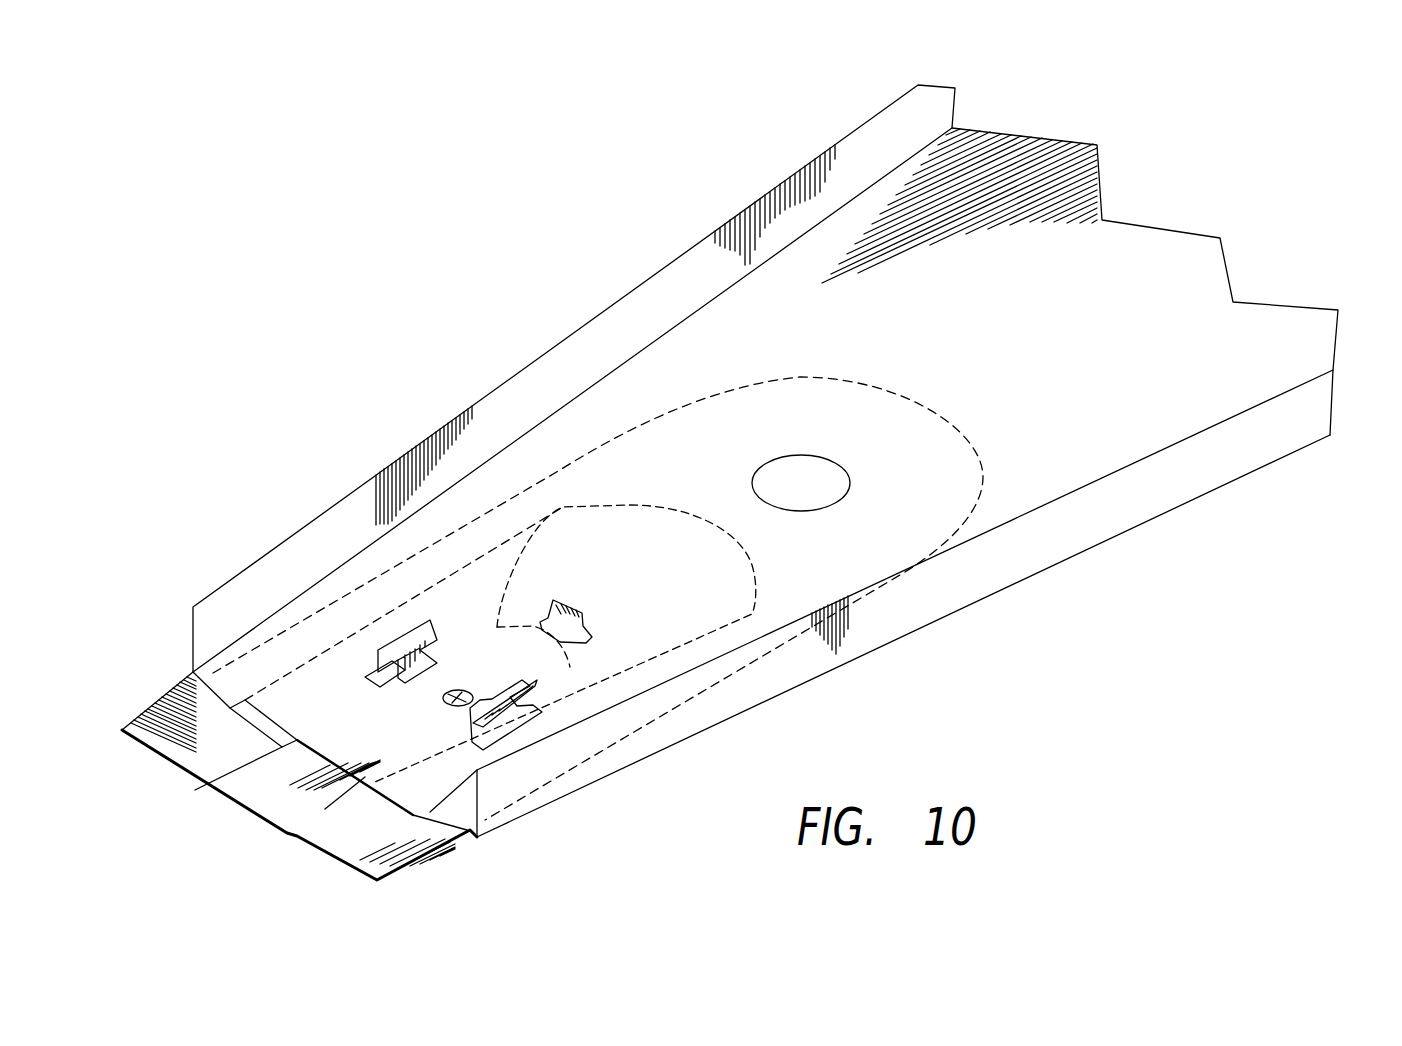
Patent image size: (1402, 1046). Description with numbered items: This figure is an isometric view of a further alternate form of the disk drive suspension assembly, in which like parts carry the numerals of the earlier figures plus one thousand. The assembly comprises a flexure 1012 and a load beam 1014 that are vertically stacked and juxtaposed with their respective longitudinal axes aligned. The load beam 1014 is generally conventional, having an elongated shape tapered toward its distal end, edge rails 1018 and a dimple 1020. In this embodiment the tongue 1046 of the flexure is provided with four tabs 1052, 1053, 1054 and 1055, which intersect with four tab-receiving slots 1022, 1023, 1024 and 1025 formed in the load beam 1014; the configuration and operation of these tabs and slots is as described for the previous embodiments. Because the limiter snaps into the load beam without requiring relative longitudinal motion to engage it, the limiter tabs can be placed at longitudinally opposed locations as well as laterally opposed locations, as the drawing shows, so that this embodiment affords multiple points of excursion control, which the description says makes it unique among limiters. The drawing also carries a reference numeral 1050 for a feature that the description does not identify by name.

The flexure 1012 is at (877, 148).
The load beam 1014 is at (1228, 268).
The edge rails 1018 is at (162, 757).
The dimple 1020 is at (463, 690).
The tab-receiving slot 1022 is at (372, 668).
The tab-receiving slot 1023 is at (593, 627).
The tab-receiving slot 1024 is at (500, 732).
The tab-receiving slot 1025 is at (352, 757).
The tongue 1046 is at (547, 553).
The support surface 1050 is at (248, 793).
The tab 1052 is at (408, 633).
The tab 1053 is at (583, 613).
The tab 1054 is at (508, 692).
The tab 1055 is at (350, 757).